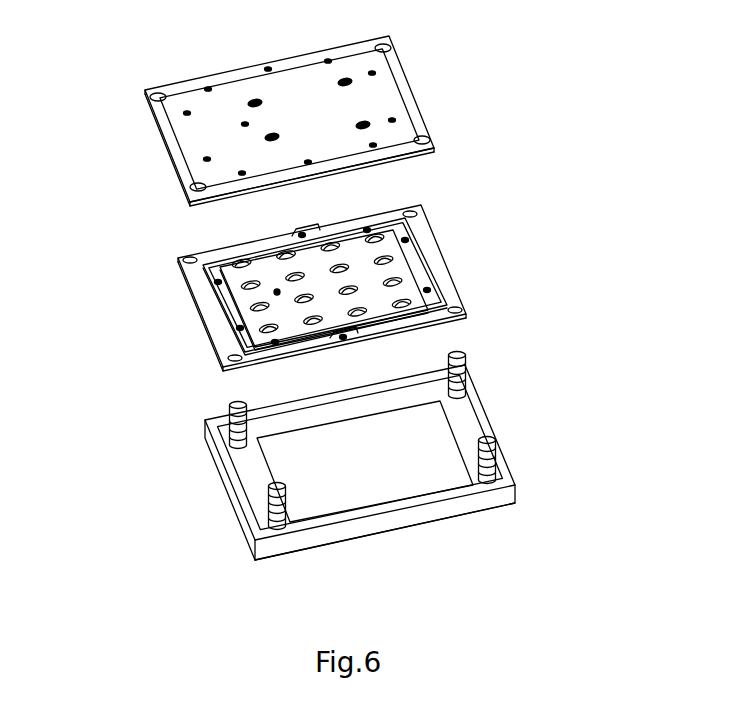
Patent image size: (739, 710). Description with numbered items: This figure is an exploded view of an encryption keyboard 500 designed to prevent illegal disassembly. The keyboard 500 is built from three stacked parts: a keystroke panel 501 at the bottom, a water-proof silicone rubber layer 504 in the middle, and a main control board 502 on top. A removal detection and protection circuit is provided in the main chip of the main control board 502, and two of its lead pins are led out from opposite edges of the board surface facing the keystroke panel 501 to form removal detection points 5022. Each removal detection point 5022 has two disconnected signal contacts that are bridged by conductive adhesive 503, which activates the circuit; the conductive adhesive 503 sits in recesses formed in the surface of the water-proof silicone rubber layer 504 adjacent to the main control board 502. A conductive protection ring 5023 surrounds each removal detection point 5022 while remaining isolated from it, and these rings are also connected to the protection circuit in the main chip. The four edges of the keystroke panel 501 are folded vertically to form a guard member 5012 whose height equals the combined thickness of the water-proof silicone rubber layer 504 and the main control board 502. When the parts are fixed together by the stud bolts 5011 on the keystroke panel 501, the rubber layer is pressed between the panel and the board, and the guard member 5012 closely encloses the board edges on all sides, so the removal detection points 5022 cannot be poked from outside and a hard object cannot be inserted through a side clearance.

The encryption keyboard 500 is at (107, 31).
The keystroke panel 501 is at (460, 433).
The stud bolts 5011 is at (466, 369).
The guard member 5012 is at (427, 505).
The main control board 502 is at (415, 90).
The removal detection points 5022 is at (327, 169).
The conductive protection ring 5023 is at (308, 163).
The conductive adhesive 503 is at (318, 229).
The water-proof silicone rubber layer 504 is at (402, 263).